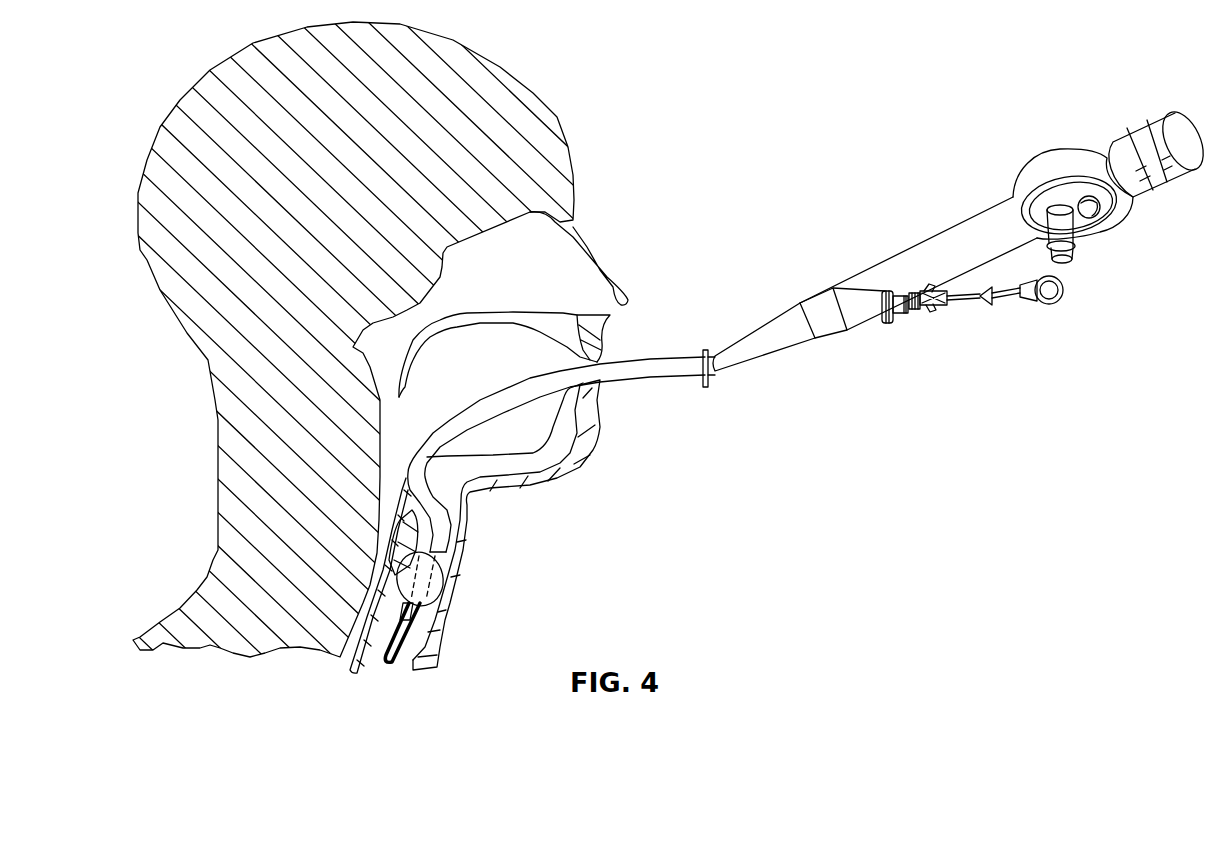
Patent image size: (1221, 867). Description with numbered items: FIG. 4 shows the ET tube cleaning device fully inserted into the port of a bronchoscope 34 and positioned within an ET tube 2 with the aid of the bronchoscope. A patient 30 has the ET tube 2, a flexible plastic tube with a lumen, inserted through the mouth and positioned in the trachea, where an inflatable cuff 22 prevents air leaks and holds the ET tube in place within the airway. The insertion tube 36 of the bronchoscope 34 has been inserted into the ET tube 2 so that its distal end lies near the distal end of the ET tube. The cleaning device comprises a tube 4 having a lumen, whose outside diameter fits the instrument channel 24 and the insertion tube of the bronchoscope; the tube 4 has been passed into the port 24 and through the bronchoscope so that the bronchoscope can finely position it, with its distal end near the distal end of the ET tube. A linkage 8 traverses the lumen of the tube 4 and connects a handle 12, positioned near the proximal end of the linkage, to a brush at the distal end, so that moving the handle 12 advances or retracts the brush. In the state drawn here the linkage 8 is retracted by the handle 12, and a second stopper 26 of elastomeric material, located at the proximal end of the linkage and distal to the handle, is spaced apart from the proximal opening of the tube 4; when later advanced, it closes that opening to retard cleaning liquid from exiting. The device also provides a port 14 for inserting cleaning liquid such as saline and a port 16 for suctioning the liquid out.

The ET tube 2 is at (657, 378).
The tube 4 is at (938, 290).
The linkage 8 is at (953, 303).
The handle 12 is at (1061, 303).
The port 14 is at (920, 291).
The port 16 is at (925, 308).
The inflatable cuff 22 is at (440, 607).
The instrument channel 24 is at (889, 325).
The second stopper 26 is at (985, 302).
The patient 30 is at (535, 95).
The bronchoscope 34 is at (988, 227).
The insertion tube 36 is at (711, 378).